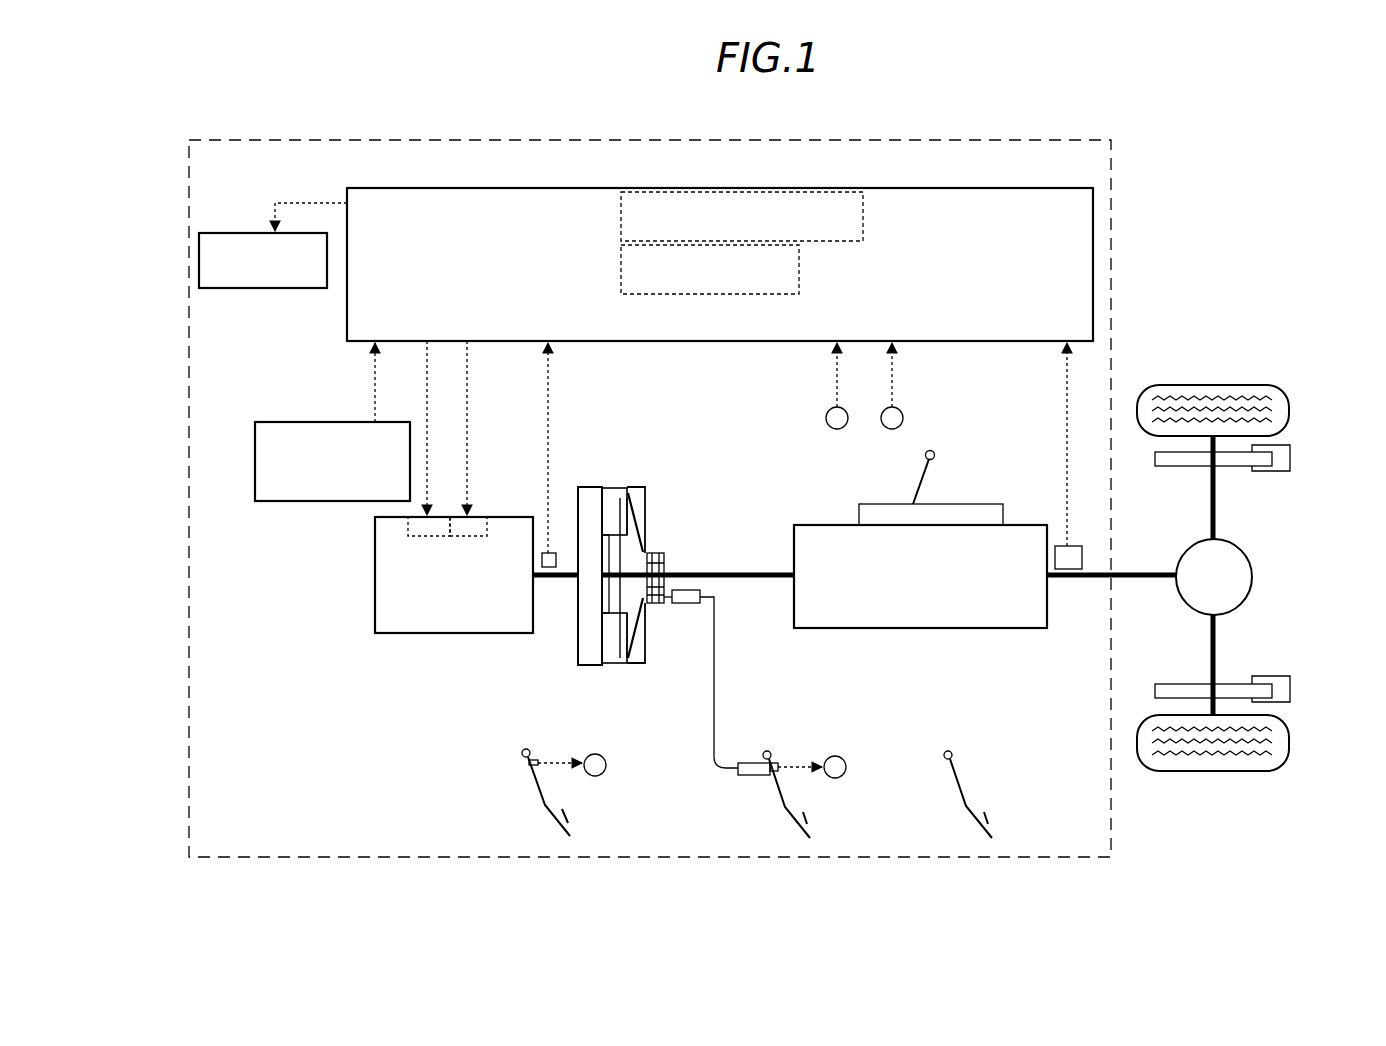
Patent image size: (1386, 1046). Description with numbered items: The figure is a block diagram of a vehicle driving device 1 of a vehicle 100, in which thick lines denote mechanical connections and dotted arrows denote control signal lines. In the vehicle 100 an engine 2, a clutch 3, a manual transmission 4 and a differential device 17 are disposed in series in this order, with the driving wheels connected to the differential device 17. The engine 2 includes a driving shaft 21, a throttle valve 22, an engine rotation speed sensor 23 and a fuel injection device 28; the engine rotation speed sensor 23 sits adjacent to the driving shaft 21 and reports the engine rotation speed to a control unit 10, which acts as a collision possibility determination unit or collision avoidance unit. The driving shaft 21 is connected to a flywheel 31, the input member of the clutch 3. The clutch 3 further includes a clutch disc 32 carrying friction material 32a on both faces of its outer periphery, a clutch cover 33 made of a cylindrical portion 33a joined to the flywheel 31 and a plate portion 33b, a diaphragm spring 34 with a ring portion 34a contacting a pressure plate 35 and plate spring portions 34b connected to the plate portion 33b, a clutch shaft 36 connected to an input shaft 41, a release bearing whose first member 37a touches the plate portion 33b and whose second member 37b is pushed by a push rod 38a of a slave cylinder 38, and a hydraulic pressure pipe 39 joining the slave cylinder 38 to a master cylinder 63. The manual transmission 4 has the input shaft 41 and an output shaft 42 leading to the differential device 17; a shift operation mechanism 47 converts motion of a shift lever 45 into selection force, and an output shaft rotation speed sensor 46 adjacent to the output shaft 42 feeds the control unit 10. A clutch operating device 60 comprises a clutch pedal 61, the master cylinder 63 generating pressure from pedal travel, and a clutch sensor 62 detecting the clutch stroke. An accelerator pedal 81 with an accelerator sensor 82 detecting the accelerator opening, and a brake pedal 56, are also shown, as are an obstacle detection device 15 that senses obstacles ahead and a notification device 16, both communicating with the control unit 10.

The vehicle driving device 1 is at (610, 140).
The engine 2 is at (414, 633).
The clutch 3 is at (640, 568).
The manual transmission 4 is at (926, 628).
The control unit 10 is at (493, 188).
The obstacle detection device 15 is at (317, 422).
The notification device 16 is at (246, 233).
The differential device 17 is at (1200, 539).
The driving shaft 21 is at (552, 580).
The throttle valve 22 is at (474, 520).
The engine rotation speed sensor 23 is at (551, 553).
The fuel injection device 28 is at (431, 520).
The flywheel 31 is at (583, 647).
The clutch disc 32 is at (623, 660).
The friction material 32a is at (606, 657).
The clutch cover 33 is at (613, 468).
The cylindrical portion 33a is at (633, 667).
The plate portion 33b is at (643, 645).
The diaphragm spring 34 is at (642, 508).
The ring portion 34a is at (630, 495).
The plate spring portion 34b is at (638, 520).
The pressure plate 35 is at (622, 502).
The clutch shaft 36 is at (706, 581).
The first member 37a is at (660, 559).
The second member 37b is at (666, 567).
The slave cylinder 38 is at (684, 603).
The push rod 38a is at (666, 604).
The hydraulic pressure pipe 39 is at (722, 692).
The input shaft 41 is at (739, 569).
The output shaft 42 is at (1069, 580).
The shift lever 45 is at (920, 477).
The output shaft rotation speed sensor 46 is at (1075, 546).
The shift operation mechanism 47 is at (859, 515).
The brake pedal 56 is at (970, 804).
The clutch operating device 60 is at (802, 720).
The clutch pedal 61 is at (789, 804).
The clutch sensor 62 is at (784, 770).
The master cylinder 63 is at (741, 762).
The accelerator pedal 81 is at (547, 804).
The accelerator sensor 82 is at (540, 766).
The vehicle 100 is at (1168, 290).